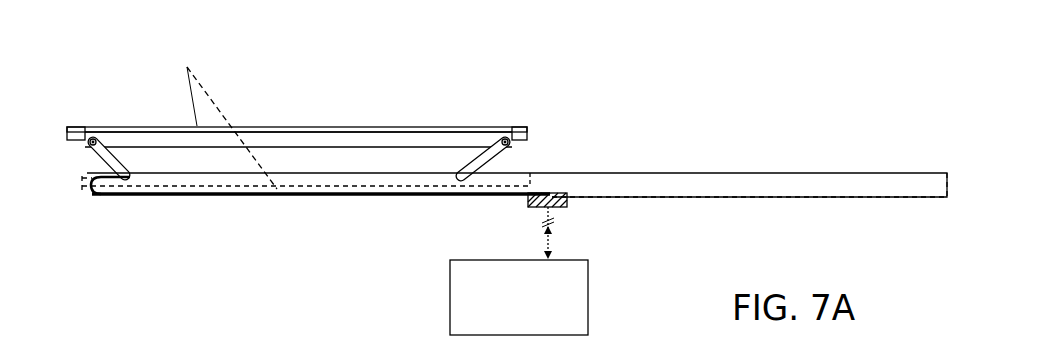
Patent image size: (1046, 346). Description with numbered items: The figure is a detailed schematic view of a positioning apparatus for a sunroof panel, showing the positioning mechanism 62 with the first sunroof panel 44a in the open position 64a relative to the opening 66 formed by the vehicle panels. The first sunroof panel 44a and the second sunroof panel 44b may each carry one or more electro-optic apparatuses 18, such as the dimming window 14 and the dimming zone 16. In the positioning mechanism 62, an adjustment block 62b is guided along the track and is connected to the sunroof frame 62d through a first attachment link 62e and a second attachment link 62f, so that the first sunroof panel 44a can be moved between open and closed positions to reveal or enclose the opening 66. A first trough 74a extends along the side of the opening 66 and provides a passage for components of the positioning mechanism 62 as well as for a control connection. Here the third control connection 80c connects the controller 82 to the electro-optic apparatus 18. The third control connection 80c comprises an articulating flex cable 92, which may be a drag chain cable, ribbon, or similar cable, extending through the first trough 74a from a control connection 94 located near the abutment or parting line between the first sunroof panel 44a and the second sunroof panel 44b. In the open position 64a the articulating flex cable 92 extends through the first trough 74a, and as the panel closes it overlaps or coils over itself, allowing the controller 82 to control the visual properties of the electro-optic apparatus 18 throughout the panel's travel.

The dimming window 14 is at (164, 114).
The dimming zone 16 is at (164, 114).
The electro-optic apparatus 18 is at (187, 67).
The first sunroof panel 44a is at (340, 125).
The second sunroof panel 44b is at (333, 197).
The positioning mechanism 62 is at (480, 94).
The open position 64a is at (480, 94).
The adjustment block 62b is at (290, 197).
The sunroof frame 62d is at (450, 137).
The first attachment link 62e is at (102, 136).
The second attachment link 62f is at (493, 147).
The opening 66 is at (741, 189).
The first trough 74a is at (186, 203).
The third control connection 80c is at (421, 210).
The controller 82 is at (508, 322).
The articulating flex cable 92 is at (158, 197).
The control connection 94 is at (567, 202).